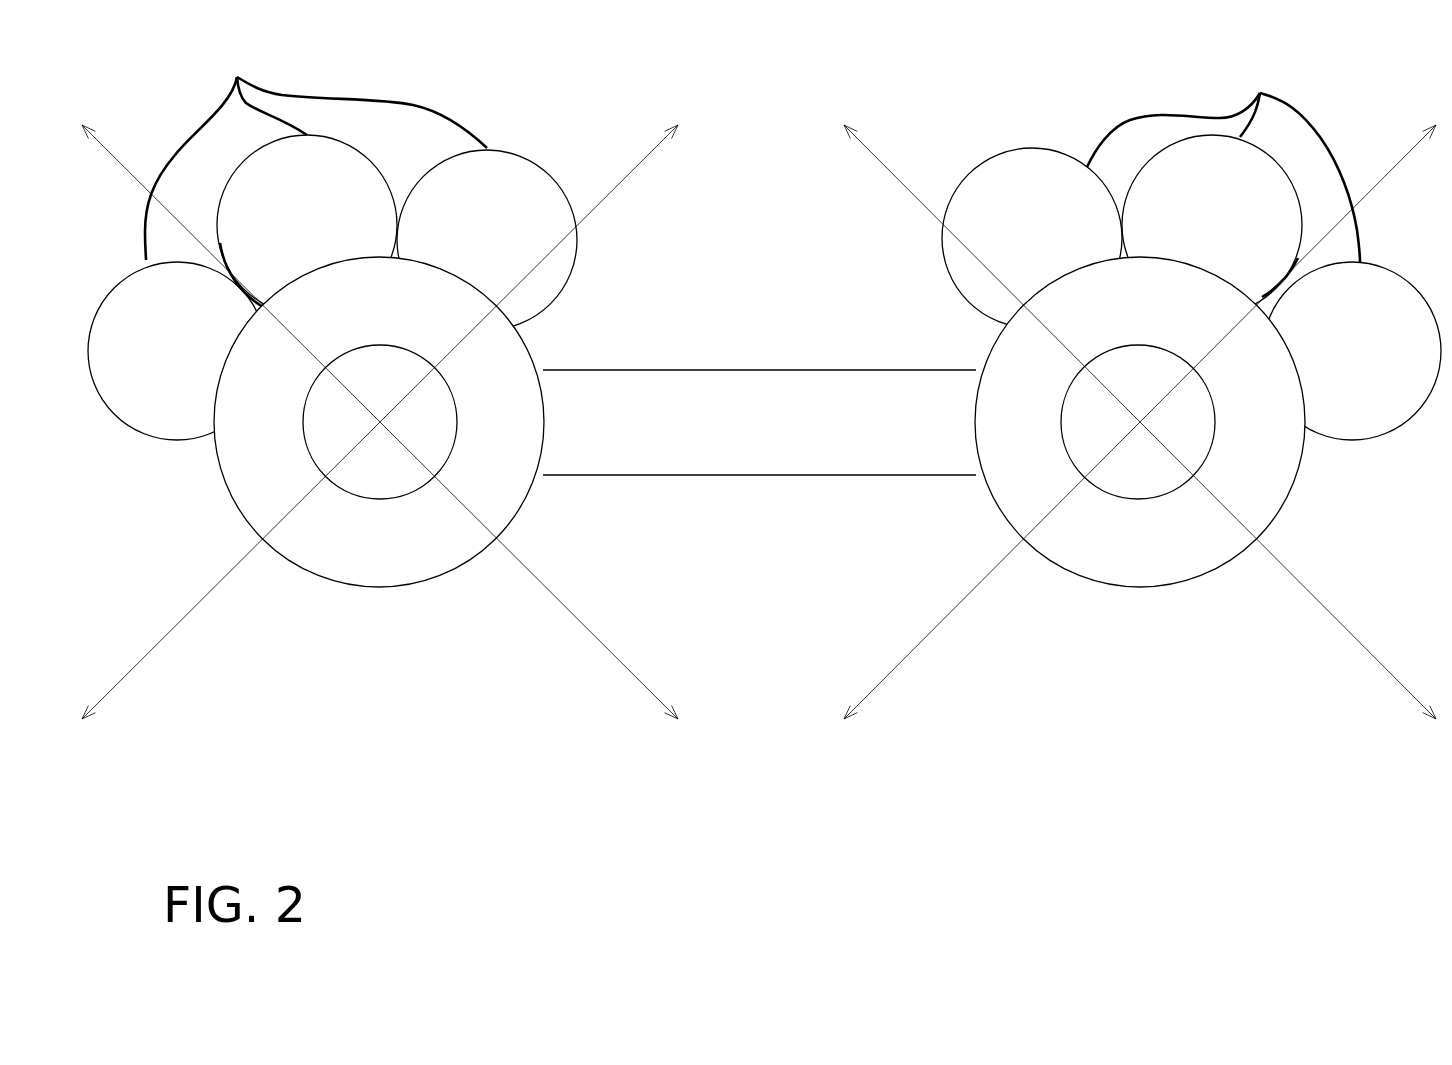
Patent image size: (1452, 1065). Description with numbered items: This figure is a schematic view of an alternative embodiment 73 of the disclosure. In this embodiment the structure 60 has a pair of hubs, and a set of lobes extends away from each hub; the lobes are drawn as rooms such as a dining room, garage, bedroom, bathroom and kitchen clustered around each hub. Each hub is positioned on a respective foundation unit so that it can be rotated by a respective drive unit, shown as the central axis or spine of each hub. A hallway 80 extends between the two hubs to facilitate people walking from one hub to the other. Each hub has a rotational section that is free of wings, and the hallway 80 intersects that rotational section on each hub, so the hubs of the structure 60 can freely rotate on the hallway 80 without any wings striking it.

The structure 60 is at (1142, 375).
The alternative embodiment 73 is at (593, 719).
The hallway 80 is at (742, 371).